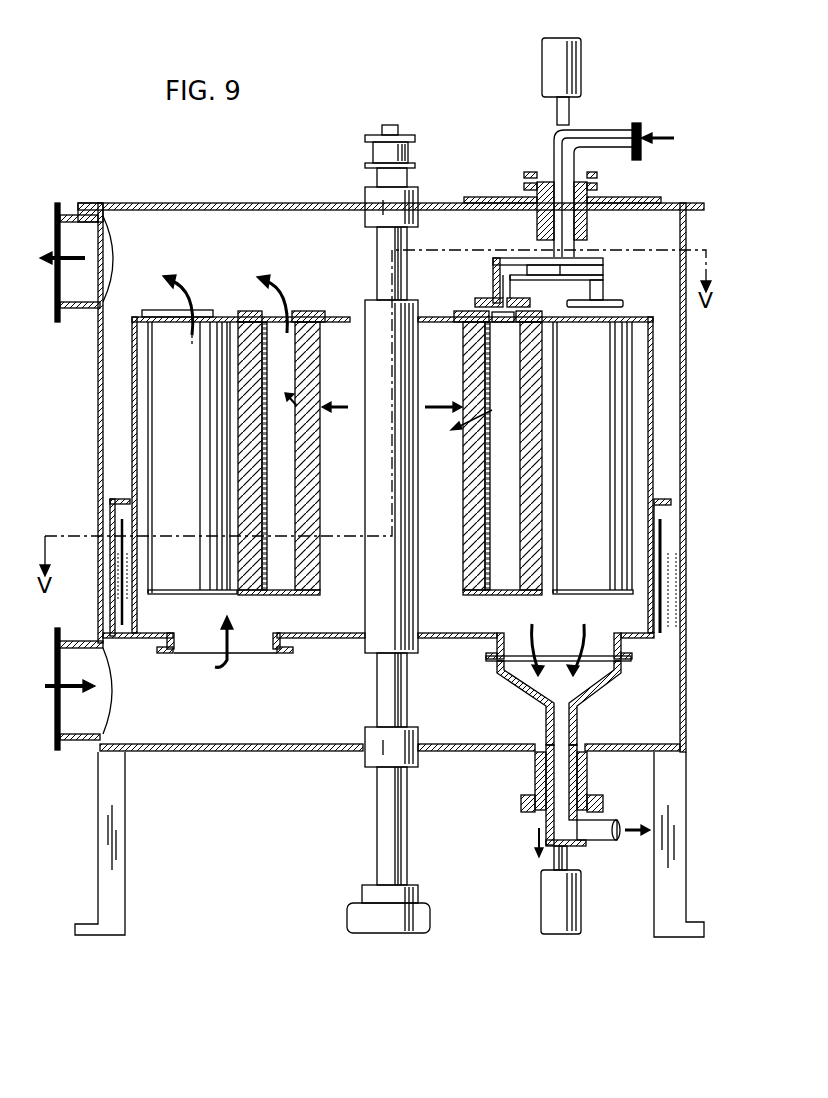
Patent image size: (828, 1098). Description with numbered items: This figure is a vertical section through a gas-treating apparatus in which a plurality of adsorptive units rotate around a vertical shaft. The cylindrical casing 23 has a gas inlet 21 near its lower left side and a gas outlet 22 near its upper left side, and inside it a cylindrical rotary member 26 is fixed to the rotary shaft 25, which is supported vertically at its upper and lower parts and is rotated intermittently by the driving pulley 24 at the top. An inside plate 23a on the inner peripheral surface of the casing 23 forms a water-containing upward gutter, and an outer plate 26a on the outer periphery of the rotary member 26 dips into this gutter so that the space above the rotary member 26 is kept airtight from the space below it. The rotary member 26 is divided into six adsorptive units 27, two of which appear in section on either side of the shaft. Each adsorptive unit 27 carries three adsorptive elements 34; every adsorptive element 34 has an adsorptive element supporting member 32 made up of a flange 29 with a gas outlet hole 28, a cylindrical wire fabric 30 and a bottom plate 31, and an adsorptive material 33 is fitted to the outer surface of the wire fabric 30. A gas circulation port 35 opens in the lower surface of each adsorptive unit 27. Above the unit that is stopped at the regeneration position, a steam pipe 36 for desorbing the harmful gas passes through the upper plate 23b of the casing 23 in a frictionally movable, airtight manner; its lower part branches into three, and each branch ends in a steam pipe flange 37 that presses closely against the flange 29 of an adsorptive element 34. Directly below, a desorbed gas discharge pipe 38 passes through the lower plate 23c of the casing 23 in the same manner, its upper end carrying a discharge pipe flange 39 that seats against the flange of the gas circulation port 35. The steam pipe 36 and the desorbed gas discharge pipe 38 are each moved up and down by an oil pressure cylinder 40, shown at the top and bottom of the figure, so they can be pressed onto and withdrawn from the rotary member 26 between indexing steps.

The gas inlet 21 is at (75, 748).
The gas outlet 22 is at (72, 220).
The cylindrical casing 23 is at (98, 390).
The inside plate 23a is at (123, 622).
The upper plate 23b is at (432, 205).
The lower plate 23c is at (446, 752).
The driving pulley 24 is at (373, 150).
The rotary shaft 25 is at (377, 250).
The cylindrical rotary member 26 is at (135, 352).
The outer plate 26a is at (112, 517).
The adsorptive unit 27 is at (336, 355).
The gas outlet hole 28 is at (283, 330).
The flange 29 is at (250, 317).
The cylindrical wire fabric 30 is at (268, 455).
The bottom plate 31 is at (305, 598).
The adsorptive element supporting member 32 is at (315, 310).
The adsorptive material 33 is at (316, 505).
The adsorptive element 34 is at (352, 408).
The gas circulation port 35 is at (250, 655).
The steam pipe 36 is at (607, 128).
The steam pipe flange 37 is at (490, 300).
The desorbed gas discharge pipe 38 is at (535, 706).
The discharge pipe flange 39 is at (490, 666).
The oil pressure cylinder 40 is at (542, 80).